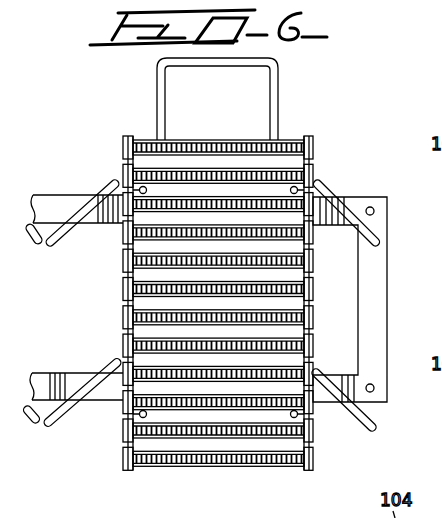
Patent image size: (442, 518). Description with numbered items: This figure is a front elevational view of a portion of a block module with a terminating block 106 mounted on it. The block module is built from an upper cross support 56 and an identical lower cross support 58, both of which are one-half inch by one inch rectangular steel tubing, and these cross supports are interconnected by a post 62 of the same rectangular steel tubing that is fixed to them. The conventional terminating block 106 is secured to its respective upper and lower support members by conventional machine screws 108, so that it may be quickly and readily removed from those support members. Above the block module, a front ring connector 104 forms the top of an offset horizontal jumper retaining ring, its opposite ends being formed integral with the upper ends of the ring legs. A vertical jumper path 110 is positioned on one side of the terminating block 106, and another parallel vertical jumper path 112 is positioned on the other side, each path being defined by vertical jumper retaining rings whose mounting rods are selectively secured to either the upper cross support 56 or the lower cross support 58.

The upper cross support 56 is at (102, 224).
The lower cross support 58 is at (43, 422).
The post 62 is at (387, 292).
The front ring connector 104 is at (272, 63).
The terminating block 106 is at (317, 141).
The machine screw 108 is at (140, 188).
The vertical jumper path 110 is at (350, 194).
The vertical jumper path 112 is at (91, 203).